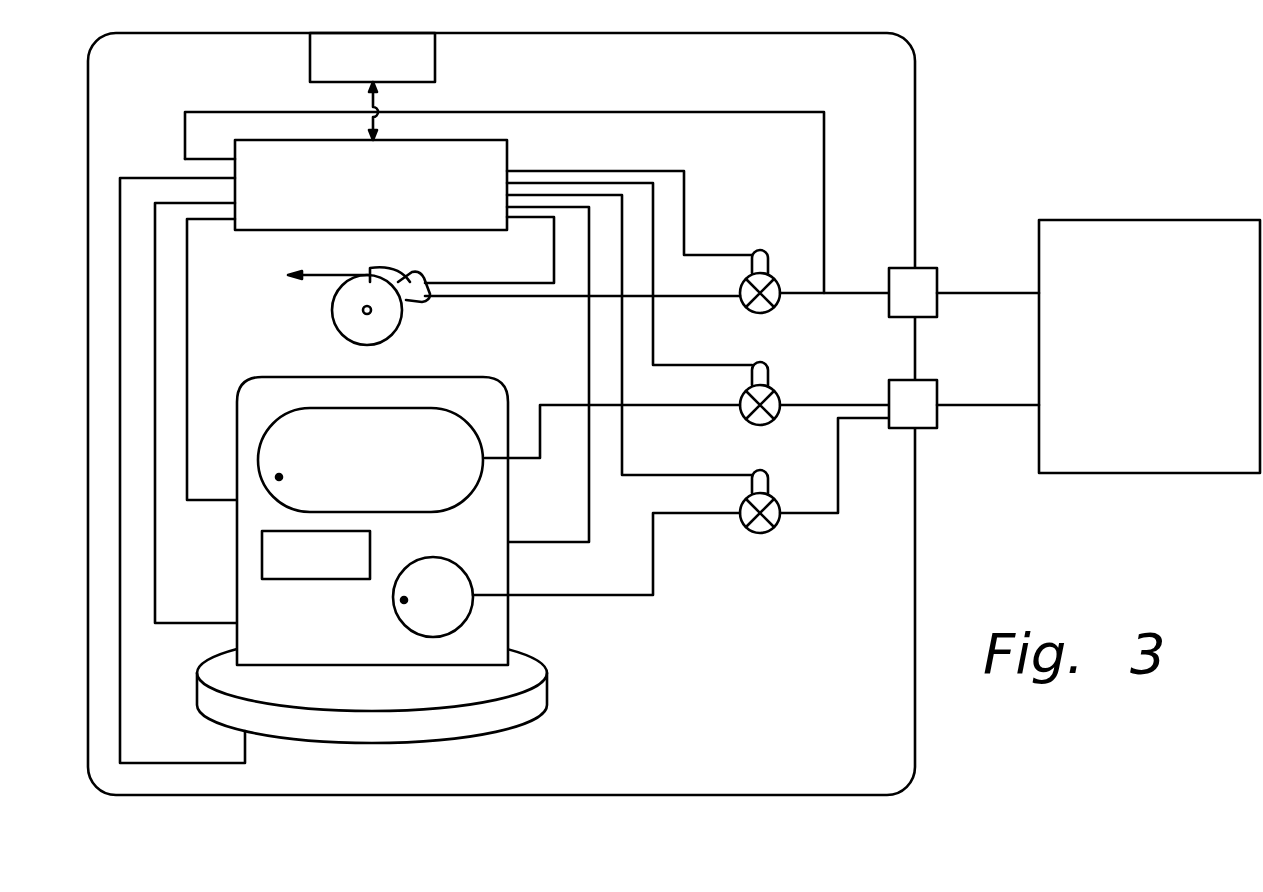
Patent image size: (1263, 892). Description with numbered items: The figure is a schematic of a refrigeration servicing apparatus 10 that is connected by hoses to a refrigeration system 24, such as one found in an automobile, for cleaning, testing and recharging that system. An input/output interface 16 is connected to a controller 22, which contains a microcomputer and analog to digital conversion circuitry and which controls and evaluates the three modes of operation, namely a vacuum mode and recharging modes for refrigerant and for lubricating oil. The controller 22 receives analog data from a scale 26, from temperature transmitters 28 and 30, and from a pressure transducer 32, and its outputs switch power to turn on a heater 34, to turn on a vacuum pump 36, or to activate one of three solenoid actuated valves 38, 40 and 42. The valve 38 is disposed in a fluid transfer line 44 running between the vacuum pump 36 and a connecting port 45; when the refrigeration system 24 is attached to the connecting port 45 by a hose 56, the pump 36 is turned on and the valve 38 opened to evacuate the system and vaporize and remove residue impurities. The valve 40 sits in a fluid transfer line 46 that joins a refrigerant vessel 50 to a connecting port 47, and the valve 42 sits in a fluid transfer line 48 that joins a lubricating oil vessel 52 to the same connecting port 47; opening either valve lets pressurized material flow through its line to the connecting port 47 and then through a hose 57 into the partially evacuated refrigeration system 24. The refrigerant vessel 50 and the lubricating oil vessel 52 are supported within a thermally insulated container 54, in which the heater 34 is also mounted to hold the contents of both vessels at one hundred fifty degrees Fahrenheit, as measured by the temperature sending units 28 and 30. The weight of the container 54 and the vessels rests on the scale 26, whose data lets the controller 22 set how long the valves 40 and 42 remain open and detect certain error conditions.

The refrigeration servicing apparatus 10 is at (915, 105).
The input/output interface 16 is at (435, 56).
The controller 22 is at (507, 145).
The refrigeration system 24 is at (1175, 220).
The scale 26 is at (465, 733).
The temperature transmitter 28 is at (335, 623).
The temperature transmitter 30 is at (285, 485).
The pressure transducer 32 is at (825, 290).
The heater 34 is at (262, 557).
The vacuum pump 36 is at (332, 314).
The solenoid actuated valve 38 is at (772, 308).
The solenoid actuated valve 40 is at (775, 393).
The solenoid actuated valve 42 is at (772, 528).
The fluid transfer line 44 is at (520, 298).
The connecting port 45 is at (925, 268).
The fluid transfer line 46 is at (565, 403).
The connecting port 47 is at (930, 428).
The fluid transfer line 48 is at (610, 595).
The refrigerant vessel 50 is at (398, 408).
The lubricating oil vessel 52 is at (478, 608).
The thermally insulated container 54 is at (256, 377).
The hose 56 is at (978, 293).
The hose 57 is at (970, 405).